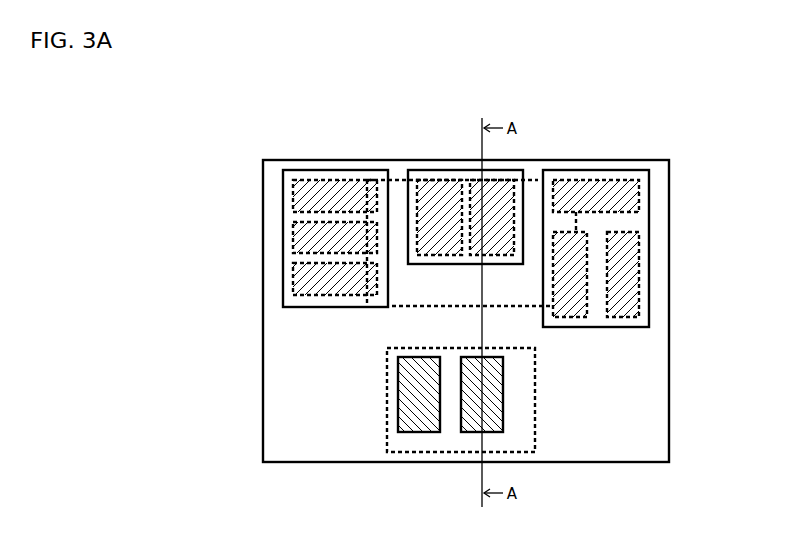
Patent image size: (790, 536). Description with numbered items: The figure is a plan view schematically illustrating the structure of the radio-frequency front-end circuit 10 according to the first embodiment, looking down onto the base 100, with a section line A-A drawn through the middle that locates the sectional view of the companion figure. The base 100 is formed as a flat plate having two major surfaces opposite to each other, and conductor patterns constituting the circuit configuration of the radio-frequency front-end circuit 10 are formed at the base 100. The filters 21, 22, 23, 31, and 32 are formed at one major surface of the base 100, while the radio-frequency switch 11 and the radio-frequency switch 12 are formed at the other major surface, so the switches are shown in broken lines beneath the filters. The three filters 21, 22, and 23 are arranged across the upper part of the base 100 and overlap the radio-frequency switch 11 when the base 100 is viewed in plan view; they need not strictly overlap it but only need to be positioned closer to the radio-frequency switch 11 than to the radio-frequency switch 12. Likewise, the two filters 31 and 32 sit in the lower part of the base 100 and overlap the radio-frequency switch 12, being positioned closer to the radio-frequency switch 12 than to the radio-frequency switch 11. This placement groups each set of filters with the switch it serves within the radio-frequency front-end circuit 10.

The radio-frequency front-end circuit 10 is at (616, 90).
The base 100 is at (660, 185).
The radio-frequency switch 11 is at (532, 182).
The radio-frequency switch 12 is at (523, 444).
The filter 21 is at (335, 170).
The filter 22 is at (440, 170).
The filter 23 is at (607, 170).
The filter 31 is at (409, 423).
The filter 32 is at (472, 423).